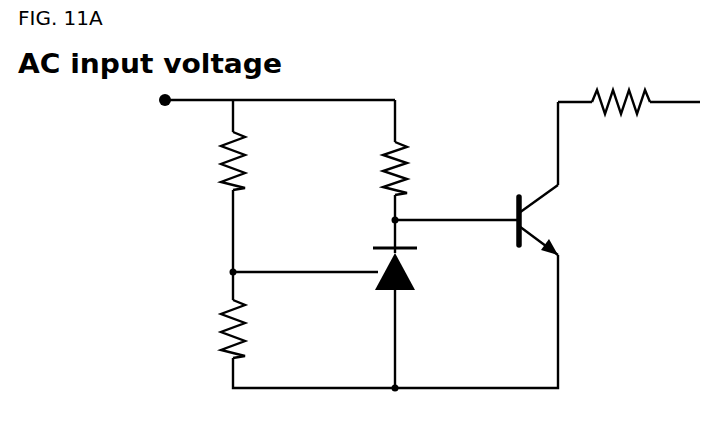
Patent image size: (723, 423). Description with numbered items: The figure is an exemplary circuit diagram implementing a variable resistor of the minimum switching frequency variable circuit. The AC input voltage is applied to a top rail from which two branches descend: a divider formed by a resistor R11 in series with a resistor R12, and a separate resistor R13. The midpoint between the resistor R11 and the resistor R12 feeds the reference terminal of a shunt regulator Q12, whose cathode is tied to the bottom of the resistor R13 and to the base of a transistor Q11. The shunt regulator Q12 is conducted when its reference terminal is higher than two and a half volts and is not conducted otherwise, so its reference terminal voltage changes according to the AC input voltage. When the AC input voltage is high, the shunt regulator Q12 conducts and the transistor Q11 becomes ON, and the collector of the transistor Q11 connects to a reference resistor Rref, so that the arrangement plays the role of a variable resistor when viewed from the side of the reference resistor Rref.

The resistor R11 is at (257, 161).
The resistor R12 is at (257, 329).
The resistor R13 is at (421, 168).
The reference resistor Rref is at (621, 85).
The transistor Q11 is at (563, 220).
The shunt regulator Q12 is at (418, 269).